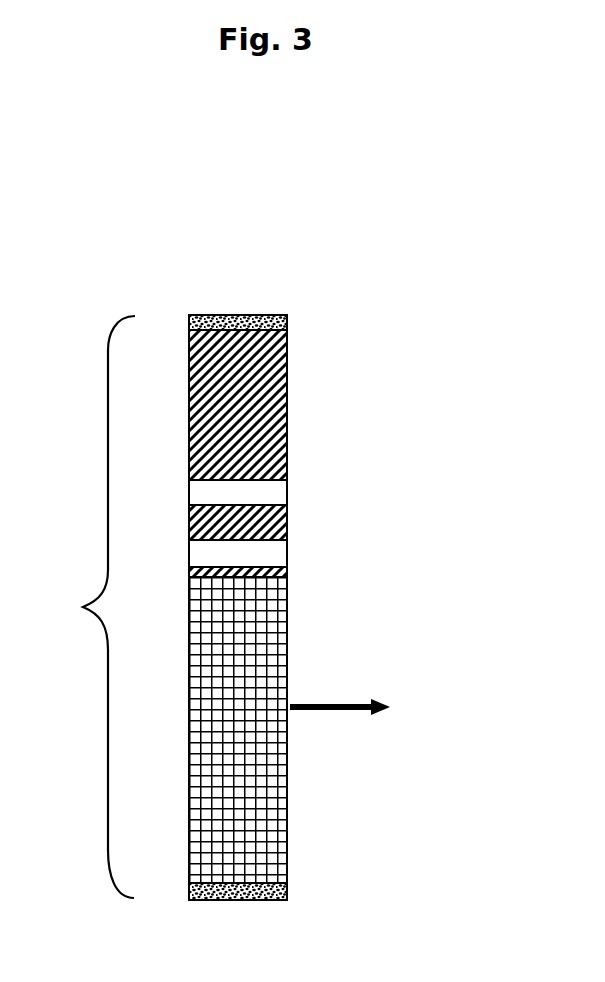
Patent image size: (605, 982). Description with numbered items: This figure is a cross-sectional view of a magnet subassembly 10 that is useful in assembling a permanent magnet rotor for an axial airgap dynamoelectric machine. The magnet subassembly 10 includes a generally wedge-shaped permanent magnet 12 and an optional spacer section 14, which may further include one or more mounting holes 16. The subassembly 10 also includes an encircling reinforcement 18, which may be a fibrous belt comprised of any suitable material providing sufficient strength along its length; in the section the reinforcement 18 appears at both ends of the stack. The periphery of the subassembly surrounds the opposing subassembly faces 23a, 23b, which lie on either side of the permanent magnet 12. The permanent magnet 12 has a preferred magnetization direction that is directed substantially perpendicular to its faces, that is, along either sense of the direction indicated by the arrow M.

The magnet subassembly 10 is at (157, 607).
The permanent magnet 12 is at (273, 744).
The spacer section 14 is at (278, 423).
The mounting holes 16 is at (280, 490).
The encircling reinforcement 18 is at (283, 325).
The subassembly face 23a is at (178, 741).
The subassembly face 23b is at (297, 633).
The arrow indicating magnetization direction M is at (357, 707).